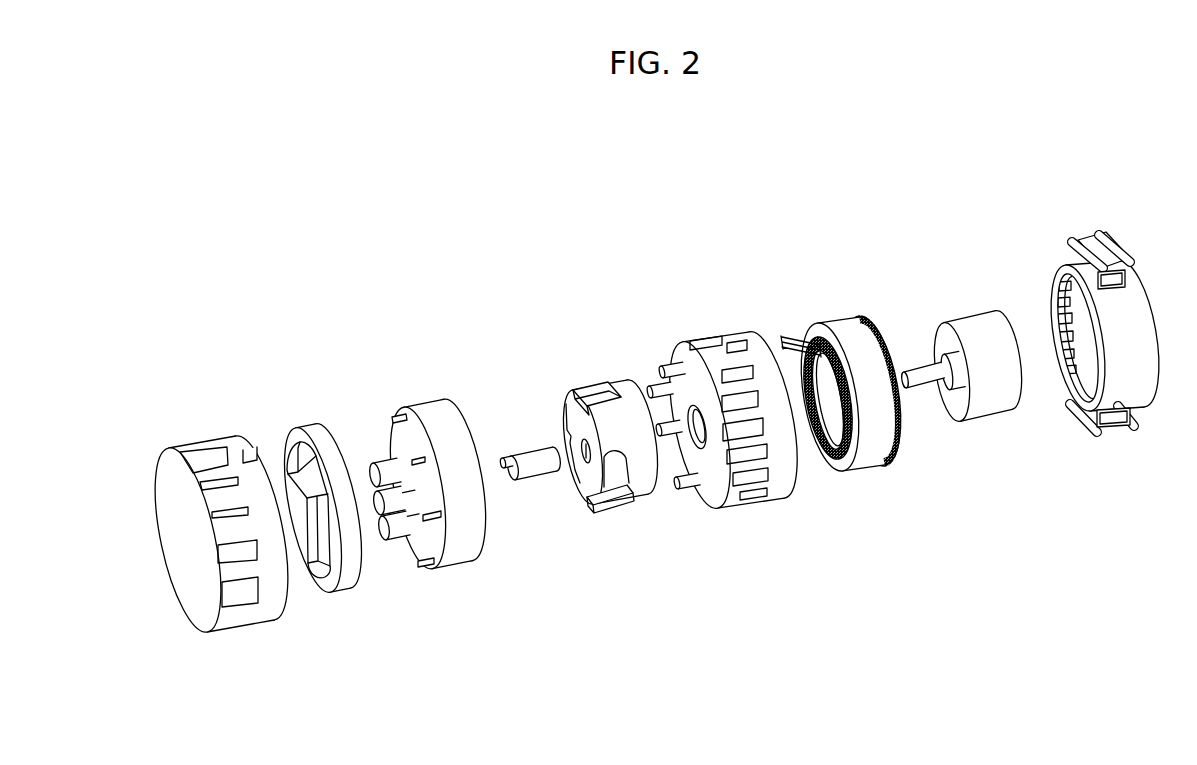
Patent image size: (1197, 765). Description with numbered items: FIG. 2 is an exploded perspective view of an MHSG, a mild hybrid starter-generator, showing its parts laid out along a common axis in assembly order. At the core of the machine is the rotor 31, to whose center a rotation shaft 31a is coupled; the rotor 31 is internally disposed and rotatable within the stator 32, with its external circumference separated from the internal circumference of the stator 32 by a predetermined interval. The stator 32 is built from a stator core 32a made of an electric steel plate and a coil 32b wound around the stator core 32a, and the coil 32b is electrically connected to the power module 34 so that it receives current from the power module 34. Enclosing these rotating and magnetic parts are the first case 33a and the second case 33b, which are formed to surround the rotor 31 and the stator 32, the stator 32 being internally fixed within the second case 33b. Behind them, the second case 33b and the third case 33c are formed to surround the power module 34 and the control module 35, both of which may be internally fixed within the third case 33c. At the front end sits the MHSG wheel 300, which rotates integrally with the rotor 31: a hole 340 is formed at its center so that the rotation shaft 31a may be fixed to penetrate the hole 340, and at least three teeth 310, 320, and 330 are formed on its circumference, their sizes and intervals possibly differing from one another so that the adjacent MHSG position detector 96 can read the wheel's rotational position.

The rotor 31 is at (972, 311).
The rotation shaft 31a is at (922, 372).
The stator 32 is at (846, 367).
The stator core 32a is at (870, 460).
The coil 32b is at (792, 333).
The first case 33a is at (1088, 239).
The second case 33b is at (733, 329).
The third case 33c is at (203, 431).
The power module 34 is at (415, 393).
The control module 35 is at (302, 419).
The MHSG position detector 96 is at (527, 446).
The MHSG wheel 300 is at (595, 423).
The tooth 310 is at (570, 403).
The tooth 320 is at (610, 455).
The tooth 330 is at (592, 500).
The hole 340 is at (583, 455).